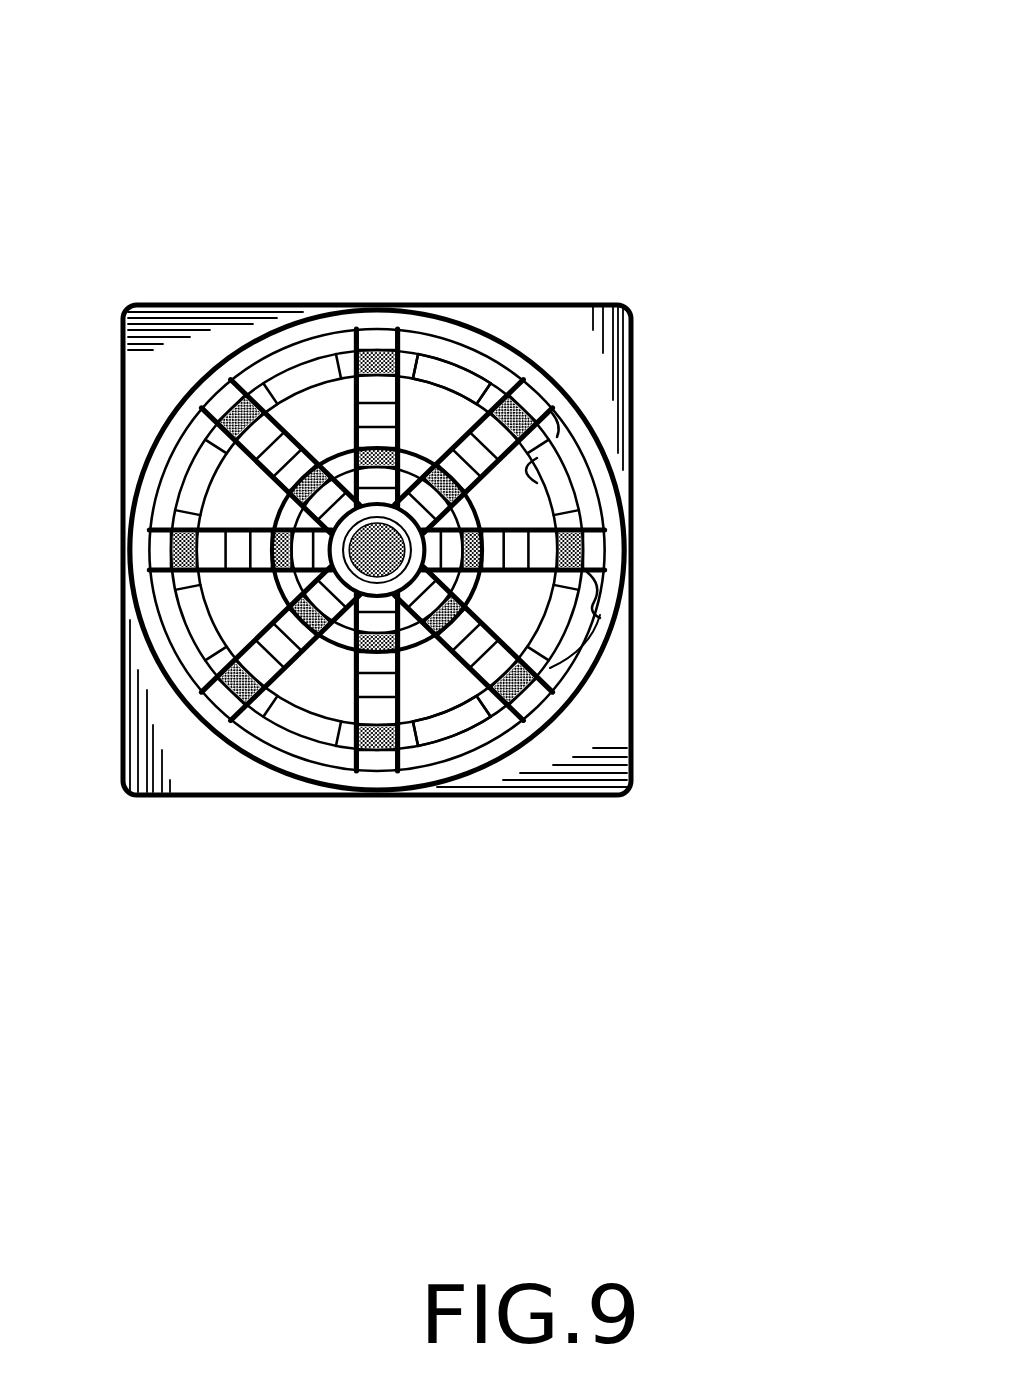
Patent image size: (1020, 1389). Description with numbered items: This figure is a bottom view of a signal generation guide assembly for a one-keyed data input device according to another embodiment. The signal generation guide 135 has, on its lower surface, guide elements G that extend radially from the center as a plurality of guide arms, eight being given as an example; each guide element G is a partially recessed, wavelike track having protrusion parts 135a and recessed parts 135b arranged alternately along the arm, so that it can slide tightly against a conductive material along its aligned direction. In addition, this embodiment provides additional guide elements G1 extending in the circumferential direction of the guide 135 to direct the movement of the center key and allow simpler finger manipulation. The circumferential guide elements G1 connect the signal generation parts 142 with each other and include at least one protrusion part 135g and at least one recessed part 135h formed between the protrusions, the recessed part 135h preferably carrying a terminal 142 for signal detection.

The guide for signal generation 135 is at (569, 280).
The protrusion part 135a is at (451, 392).
The recessed part 135b is at (348, 330).
The protrusion part 135g is at (443, 723).
The recessed part 135h is at (497, 690).
The terminal for signal detection 142 is at (640, 778).
The guide element G is at (480, 503).
The additional circumferential guide element G1 is at (600, 613).